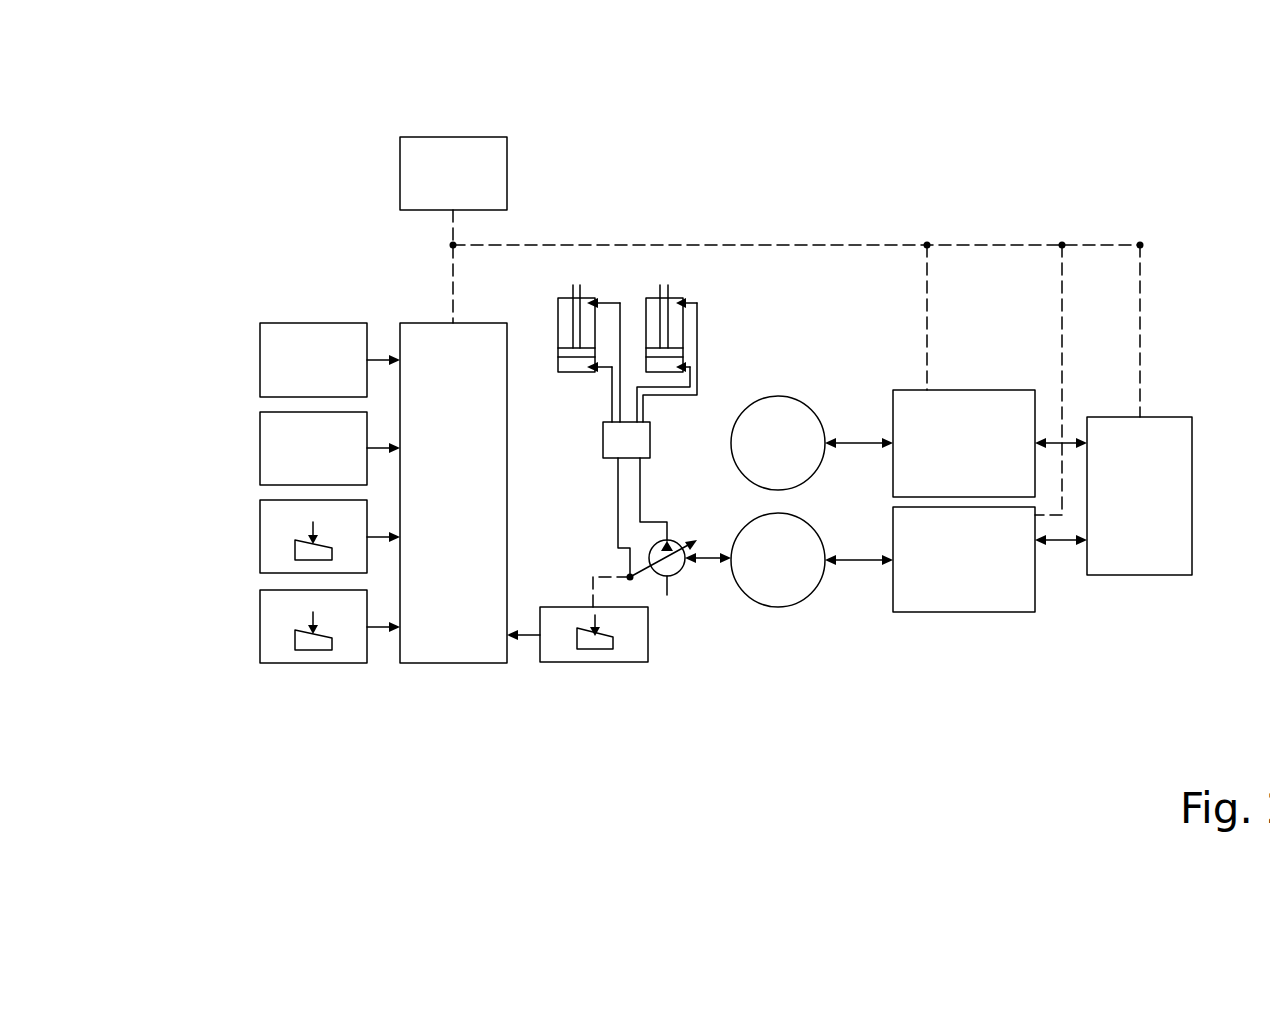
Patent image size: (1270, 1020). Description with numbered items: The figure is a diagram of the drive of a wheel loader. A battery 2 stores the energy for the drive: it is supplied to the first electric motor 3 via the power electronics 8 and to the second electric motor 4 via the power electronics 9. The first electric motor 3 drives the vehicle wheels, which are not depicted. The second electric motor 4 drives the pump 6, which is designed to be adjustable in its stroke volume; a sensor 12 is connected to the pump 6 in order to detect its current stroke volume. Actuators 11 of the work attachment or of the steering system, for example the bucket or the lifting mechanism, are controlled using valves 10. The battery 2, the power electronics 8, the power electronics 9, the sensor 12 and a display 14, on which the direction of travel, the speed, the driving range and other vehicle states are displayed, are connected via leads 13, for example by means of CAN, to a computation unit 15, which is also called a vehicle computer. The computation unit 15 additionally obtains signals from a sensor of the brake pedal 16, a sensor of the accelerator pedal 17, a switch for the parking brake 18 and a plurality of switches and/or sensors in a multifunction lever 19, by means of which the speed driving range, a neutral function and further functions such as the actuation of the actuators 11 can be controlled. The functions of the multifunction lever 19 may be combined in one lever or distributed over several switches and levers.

The battery 2 is at (1138, 575).
The first electric motor 3 is at (780, 397).
The second electric motor 4 is at (778, 607).
The pump 6 is at (677, 567).
The power electronics 8 is at (965, 390).
The power electronics 9 is at (967, 612).
The valves 10 is at (627, 440).
The actuators 11 is at (565, 320).
The sensor 12 is at (595, 663).
The leads 13 is at (898, 245).
The display 14 is at (477, 137).
The computation unit 15 is at (453, 663).
The sensor of the brake pedal 16 is at (260, 627).
The sensor of the accelerator pedal 17 is at (260, 537).
The switch for the parking brake 18 is at (260, 448).
The multifunction lever 19 is at (260, 360).